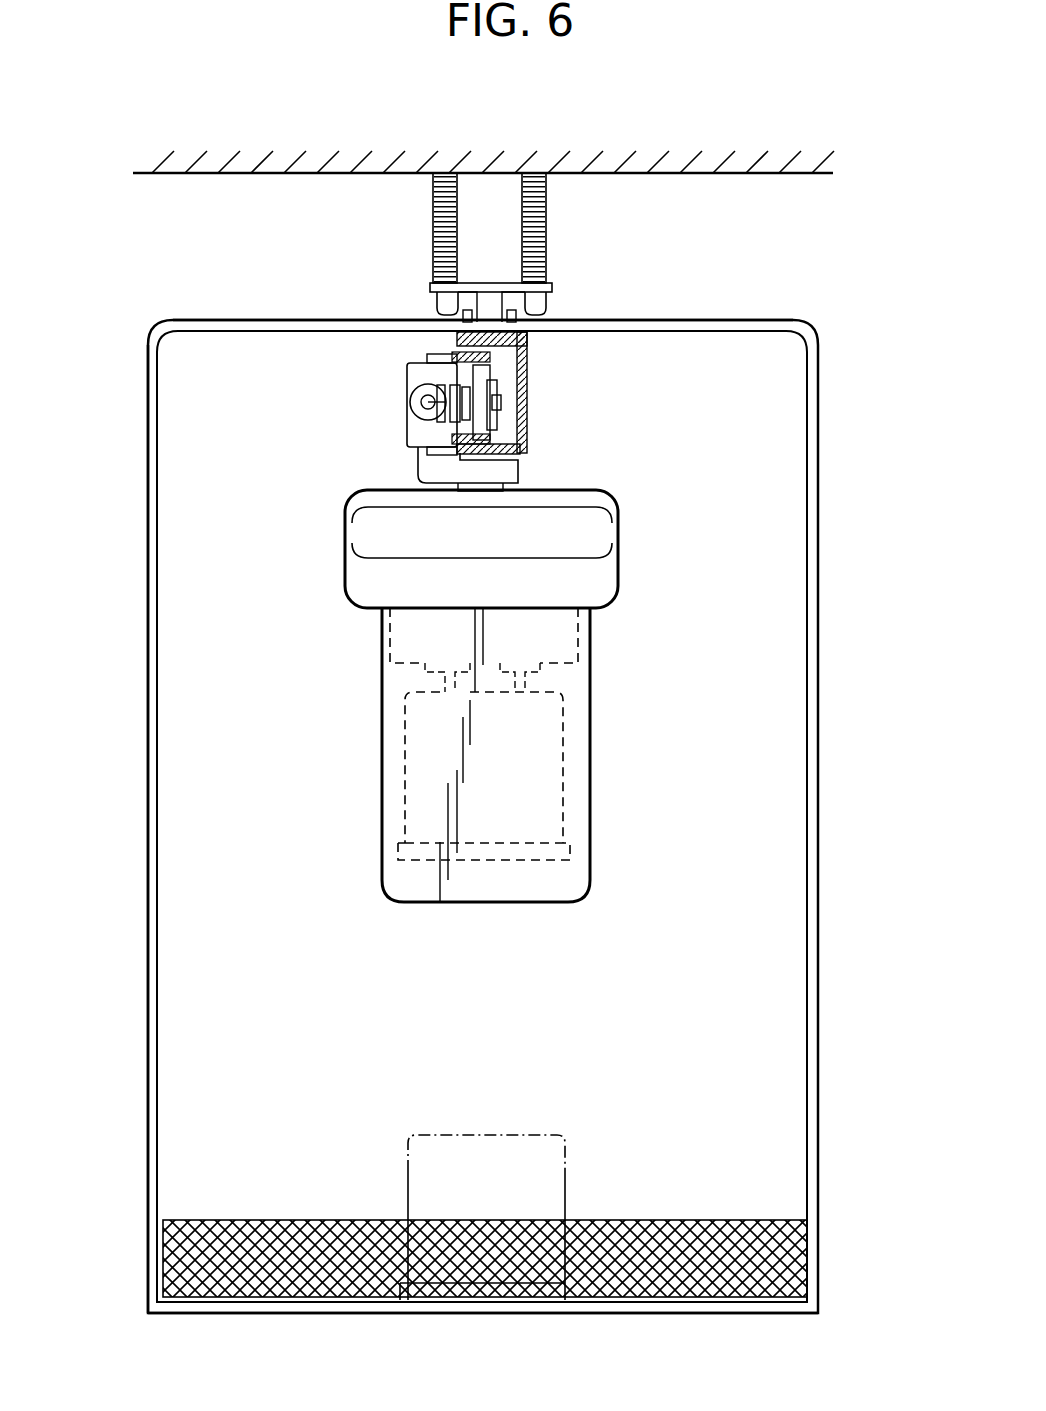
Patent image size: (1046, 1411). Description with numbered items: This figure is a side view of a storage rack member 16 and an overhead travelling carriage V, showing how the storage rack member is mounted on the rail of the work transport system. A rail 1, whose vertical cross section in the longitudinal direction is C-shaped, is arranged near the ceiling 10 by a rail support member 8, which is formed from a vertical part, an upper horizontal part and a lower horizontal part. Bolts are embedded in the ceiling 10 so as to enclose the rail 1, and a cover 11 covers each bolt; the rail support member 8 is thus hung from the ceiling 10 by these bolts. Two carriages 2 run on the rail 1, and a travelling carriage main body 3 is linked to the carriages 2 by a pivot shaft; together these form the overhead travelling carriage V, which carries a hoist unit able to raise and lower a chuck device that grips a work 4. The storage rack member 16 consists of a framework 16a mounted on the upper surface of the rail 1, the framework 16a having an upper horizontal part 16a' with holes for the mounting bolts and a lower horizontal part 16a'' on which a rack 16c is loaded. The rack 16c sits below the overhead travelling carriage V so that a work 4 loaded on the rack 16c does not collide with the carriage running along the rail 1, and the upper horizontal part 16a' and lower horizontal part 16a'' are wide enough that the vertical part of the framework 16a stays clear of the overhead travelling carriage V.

The rail 1 is at (527, 384).
The carriages 2 is at (407, 418).
The travelling carriage main body 3 is at (603, 530).
The work 4 is at (540, 792).
The rail support member 8 is at (489, 298).
The ceiling 10 is at (764, 156).
The cover 11 is at (433, 220).
The storage rack member 16 is at (495, 773).
The framework 16a is at (102, 829).
The upper horizontal part of the framework 16a' is at (483, 277).
The lower horizontal part of the framework 16a'' is at (540, 1262).
The rack 16c is at (702, 1233).
The overhead travelling carriage V is at (647, 674).